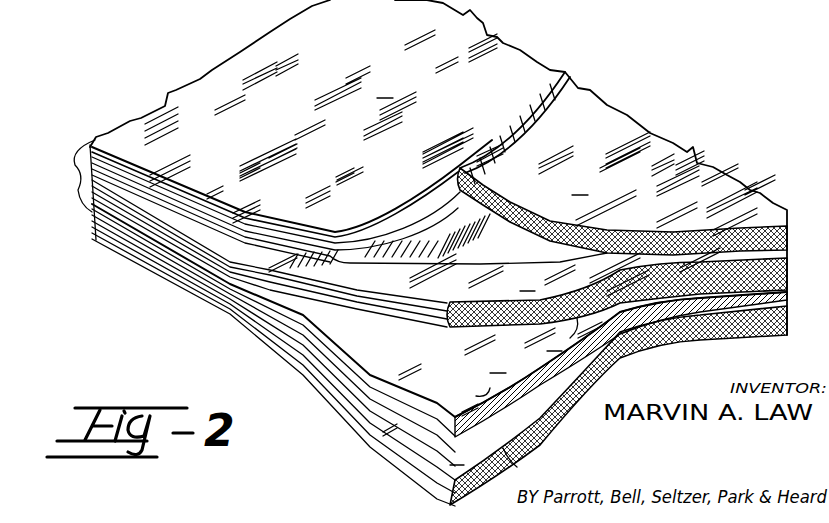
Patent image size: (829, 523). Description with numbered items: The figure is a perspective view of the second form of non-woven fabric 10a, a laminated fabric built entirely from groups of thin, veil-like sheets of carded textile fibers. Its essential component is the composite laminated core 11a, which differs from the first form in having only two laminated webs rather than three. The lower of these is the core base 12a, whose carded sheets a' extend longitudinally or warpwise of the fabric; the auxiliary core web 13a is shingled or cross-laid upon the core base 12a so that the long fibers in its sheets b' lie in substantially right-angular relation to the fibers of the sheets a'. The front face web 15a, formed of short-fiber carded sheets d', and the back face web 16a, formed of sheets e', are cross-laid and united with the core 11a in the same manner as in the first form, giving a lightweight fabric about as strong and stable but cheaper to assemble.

The non-woven fabric 10a is at (625, 100).
The core 11a is at (58, 168).
The core base 12a is at (392, 411).
The auxiliary core web 13a is at (475, 342).
The front face web 15a is at (271, 40).
The back face web 16a is at (195, 307).